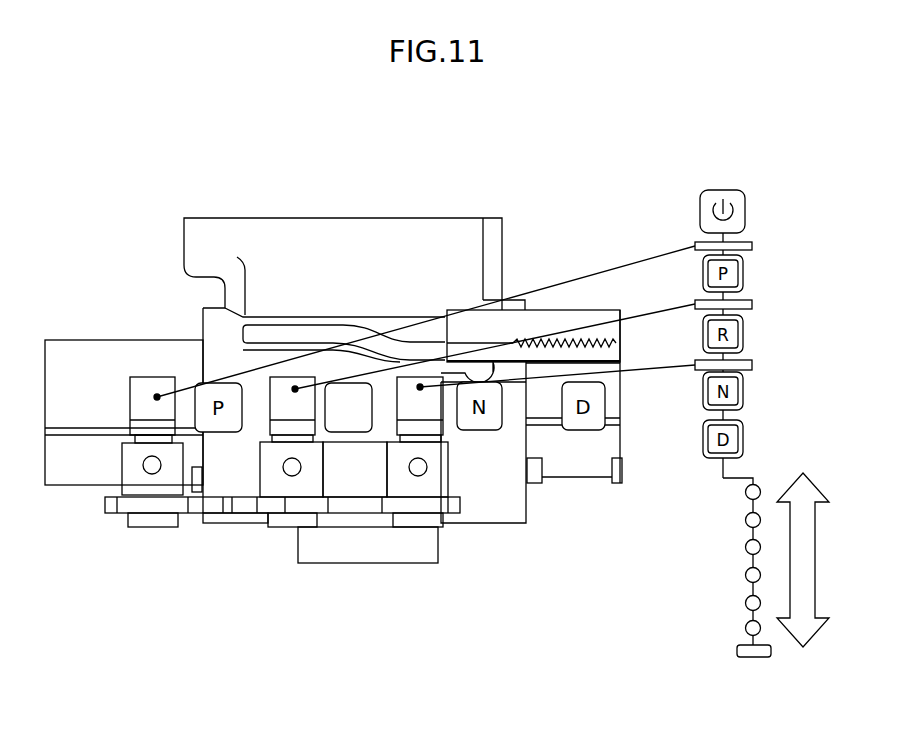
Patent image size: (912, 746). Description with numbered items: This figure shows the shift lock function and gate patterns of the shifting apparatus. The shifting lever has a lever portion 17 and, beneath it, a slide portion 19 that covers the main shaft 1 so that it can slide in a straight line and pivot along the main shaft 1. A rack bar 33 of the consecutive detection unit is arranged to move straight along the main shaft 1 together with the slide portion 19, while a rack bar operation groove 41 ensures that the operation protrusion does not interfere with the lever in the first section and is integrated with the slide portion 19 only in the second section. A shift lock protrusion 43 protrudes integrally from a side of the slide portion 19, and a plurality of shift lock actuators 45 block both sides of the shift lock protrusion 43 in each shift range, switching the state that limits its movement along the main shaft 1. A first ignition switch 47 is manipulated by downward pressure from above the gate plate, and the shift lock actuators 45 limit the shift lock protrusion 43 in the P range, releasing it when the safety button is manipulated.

The main shaft 1 is at (86, 350).
The lever portion 17 is at (383, 240).
The slide portion 19 is at (503, 498).
The rack bar 33 is at (553, 320).
The rack bar operation groove 41 is at (248, 343).
The shift lock protrusion 43 is at (380, 423).
The shift lock actuators 45 is at (153, 487).
The first ignition switch 47 is at (730, 213).